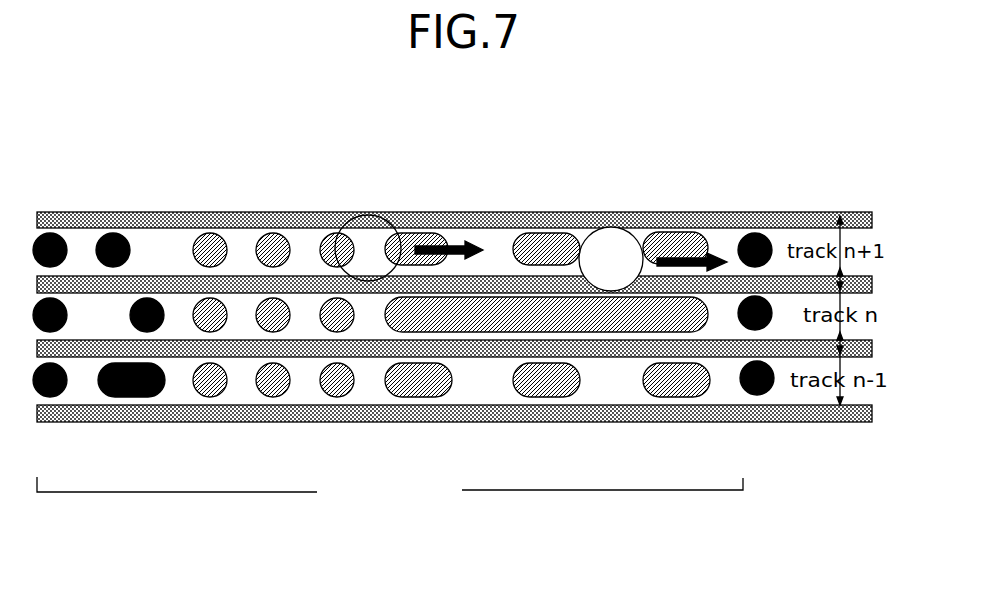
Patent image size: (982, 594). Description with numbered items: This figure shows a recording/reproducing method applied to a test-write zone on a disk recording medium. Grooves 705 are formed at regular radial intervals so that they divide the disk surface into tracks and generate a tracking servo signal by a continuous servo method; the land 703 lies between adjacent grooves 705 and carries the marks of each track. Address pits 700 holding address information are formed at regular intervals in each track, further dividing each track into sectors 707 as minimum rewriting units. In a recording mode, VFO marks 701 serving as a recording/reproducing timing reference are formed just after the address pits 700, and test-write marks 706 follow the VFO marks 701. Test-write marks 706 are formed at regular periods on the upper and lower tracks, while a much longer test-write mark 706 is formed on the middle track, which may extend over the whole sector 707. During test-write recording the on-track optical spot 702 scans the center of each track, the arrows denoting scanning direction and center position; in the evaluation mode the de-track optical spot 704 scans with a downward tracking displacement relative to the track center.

The address pit 700 is at (758, 232).
The VFO mark 701 is at (211, 245).
The on-track optical spot 702 is at (368, 250).
The land 703 is at (496, 250).
The de-track optical spot 704 is at (608, 250).
The groove 705 is at (481, 343).
The test-write mark 706 is at (655, 386).
The sector 707 is at (390, 490).